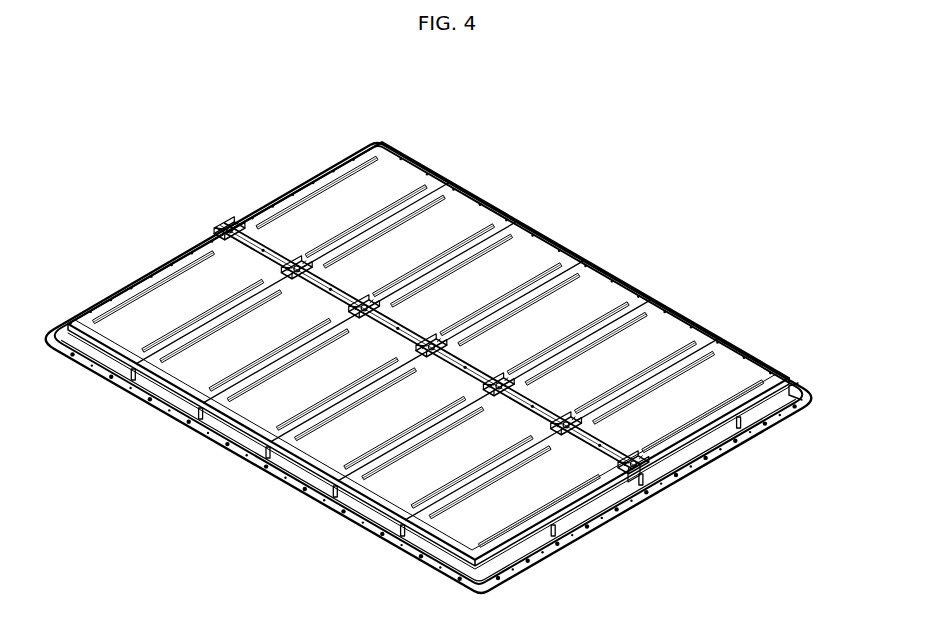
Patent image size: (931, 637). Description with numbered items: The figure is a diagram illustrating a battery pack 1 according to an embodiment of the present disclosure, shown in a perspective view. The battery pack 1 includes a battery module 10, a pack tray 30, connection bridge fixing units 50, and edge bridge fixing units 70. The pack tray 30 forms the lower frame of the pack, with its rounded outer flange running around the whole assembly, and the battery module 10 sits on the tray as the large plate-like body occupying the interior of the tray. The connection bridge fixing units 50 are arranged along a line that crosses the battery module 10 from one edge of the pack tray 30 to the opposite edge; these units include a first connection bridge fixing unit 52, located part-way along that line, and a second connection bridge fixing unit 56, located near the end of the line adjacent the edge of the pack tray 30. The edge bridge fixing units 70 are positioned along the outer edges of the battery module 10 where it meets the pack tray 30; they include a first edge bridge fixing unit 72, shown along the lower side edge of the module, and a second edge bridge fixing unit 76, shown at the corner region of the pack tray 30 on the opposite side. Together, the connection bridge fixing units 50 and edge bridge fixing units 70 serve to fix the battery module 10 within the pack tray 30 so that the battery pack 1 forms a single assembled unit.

The battery pack 1 is at (139, 131).
The battery module 10 is at (428, 381).
The pack tray 30 is at (453, 368).
The connection bridge fixing units 50 is at (437, 349).
The first connection bridge fixing unit 52 is at (493, 384).
The second connection bridge fixing unit 56 is at (634, 478).
The edge bridge fixing units 70 is at (345, 513).
The first edge bridge fixing unit 72 is at (442, 558).
The second edge bridge fixing unit 76 is at (806, 388).